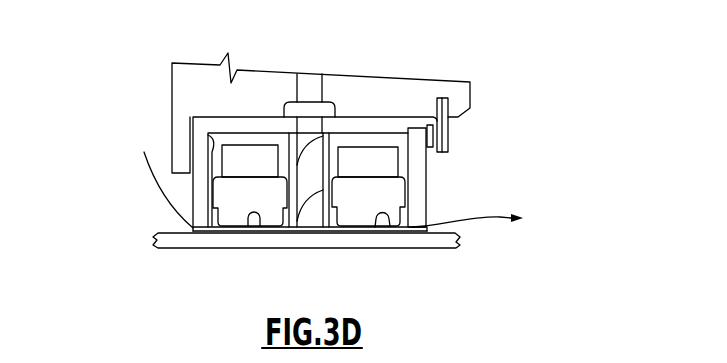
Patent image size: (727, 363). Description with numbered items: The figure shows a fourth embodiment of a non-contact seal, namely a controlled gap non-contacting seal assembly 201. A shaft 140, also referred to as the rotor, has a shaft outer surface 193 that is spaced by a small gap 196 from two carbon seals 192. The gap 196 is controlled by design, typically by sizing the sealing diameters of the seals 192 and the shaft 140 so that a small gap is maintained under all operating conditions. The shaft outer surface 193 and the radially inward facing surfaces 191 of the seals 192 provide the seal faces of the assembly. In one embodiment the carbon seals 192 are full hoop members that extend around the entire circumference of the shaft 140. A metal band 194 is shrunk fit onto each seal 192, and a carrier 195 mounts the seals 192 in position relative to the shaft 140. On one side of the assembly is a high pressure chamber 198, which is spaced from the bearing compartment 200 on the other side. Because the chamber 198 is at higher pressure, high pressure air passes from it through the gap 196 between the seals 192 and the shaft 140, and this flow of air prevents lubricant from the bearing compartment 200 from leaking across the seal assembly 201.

The shaft 140 is at (187, 240).
The radially inward facing surface 191 is at (248, 226).
The carbon seal 192 is at (267, 207).
The shaft outer surface 193 is at (350, 230).
The metal band 194 is at (243, 162).
The carrier 195 is at (190, 88).
The gap 196 is at (363, 230).
The high pressure chamber 198 is at (112, 219).
The bearing compartment 200 is at (575, 231).
The controlled gap non-contacting seal assembly 201 is at (111, 144).